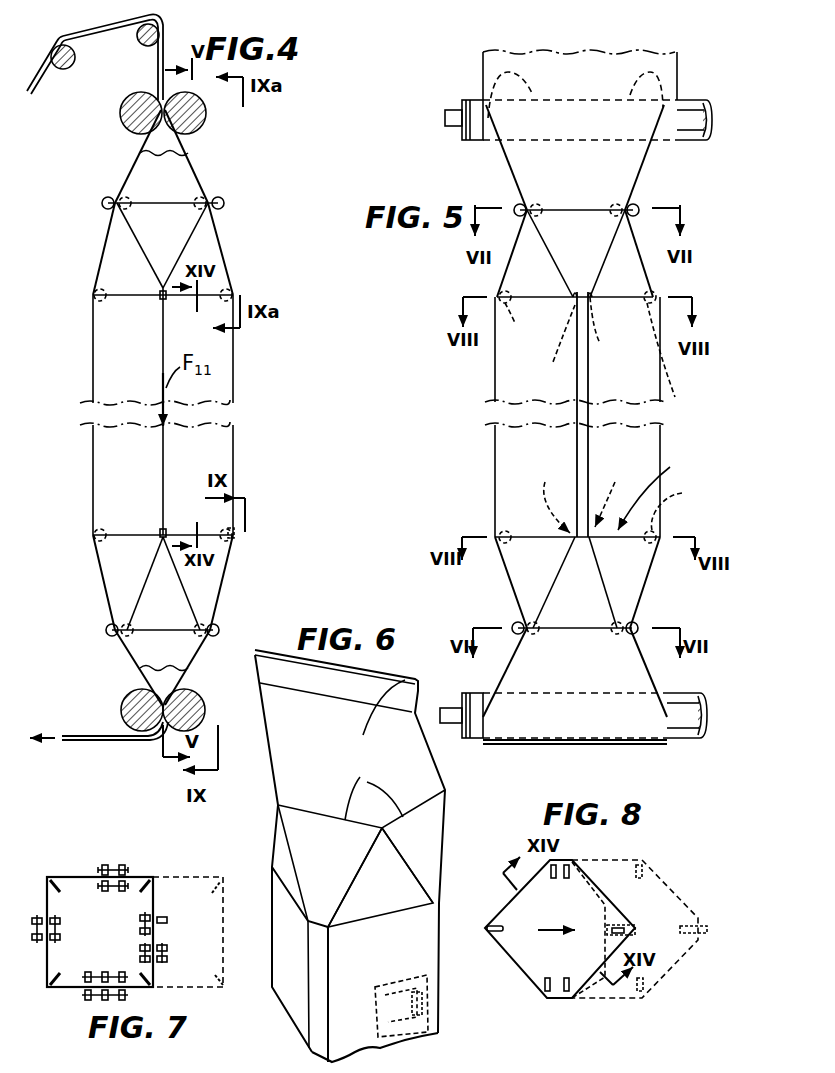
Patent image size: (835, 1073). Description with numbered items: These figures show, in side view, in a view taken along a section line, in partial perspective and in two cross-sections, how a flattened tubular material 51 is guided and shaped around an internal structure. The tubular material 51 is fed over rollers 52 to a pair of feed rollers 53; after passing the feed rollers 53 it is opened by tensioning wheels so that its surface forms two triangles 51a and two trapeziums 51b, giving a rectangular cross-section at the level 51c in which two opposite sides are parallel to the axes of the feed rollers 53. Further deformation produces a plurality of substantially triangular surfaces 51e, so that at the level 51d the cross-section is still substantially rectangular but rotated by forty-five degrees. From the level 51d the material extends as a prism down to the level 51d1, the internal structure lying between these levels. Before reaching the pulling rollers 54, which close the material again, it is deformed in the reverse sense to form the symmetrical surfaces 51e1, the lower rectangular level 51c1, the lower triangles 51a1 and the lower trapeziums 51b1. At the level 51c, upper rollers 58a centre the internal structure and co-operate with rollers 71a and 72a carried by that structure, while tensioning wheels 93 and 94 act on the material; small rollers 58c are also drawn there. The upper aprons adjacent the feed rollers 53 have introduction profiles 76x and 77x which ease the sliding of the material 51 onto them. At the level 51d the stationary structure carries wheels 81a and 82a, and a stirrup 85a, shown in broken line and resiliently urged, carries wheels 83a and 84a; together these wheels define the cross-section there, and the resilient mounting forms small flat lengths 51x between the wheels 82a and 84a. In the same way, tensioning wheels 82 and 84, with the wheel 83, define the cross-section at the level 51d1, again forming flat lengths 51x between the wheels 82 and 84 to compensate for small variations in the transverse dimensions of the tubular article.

In FIG. 4, the flattened tubular material 51 is at (99, 29).
In FIG. 5, the flattened tubular material 51 is at (672, 79).
In FIG. 6, the flattened tubular material 51 is at (266, 666).
In FIG. 4, the rollers 52 is at (137, 46).
In FIG. 4, the feed rollers 53 is at (125, 126).
In FIG. 5, the feed rollers 53 is at (480, 102).
In FIG. 4, the pulling rollers 54 is at (121, 710).
In FIG. 5, the pulling rollers 54 is at (468, 722).
In FIG. 4, the upper rollers 58a is at (102, 207).
In FIG. 5, the upper rollers 58a is at (637, 206).
In FIG. 4, the triangles 51a is at (133, 165).
In FIG. 5, the triangles 51a is at (510, 176).
In FIG. 6, the triangles 51a is at (427, 775).
In FIG. 4, the trapeziums 51b is at (200, 165).
In FIG. 5, the trapeziums 51b is at (537, 148).
In FIG. 6, the trapeziums 51b is at (412, 678).
In FIG. 4, the rectangular cross-section level 51c is at (140, 213).
In FIG. 5, the rectangular cross-section level 51c is at (580, 208).
In FIG. 6, the rectangular cross-section level 51c is at (370, 789).
In FIG. 7, the rectangular cross-section level 51c is at (47, 895).
In FIG. 5, the rotated cross-section level 51d is at (618, 298).
In FIG. 8, the rotated cross-section level 51d is at (510, 902).
In FIG. 4, the triangular surfaces 51e is at (130, 256).
In FIG. 5, the triangular surfaces 51e is at (543, 257).
In FIG. 6, the triangular surfaces 51e is at (337, 883).
In FIG. 4, the lower rotated cross-section level 51d1 is at (130, 530).
In FIG. 5, the lower rotated cross-section level 51d1 is at (667, 490).
In FIG. 4, the lower triangular surfaces 51e1 is at (180, 560).
In FIG. 5, the lower triangular surfaces 51e1 is at (545, 570).
In FIG. 4, the lower rectangular cross-section level 51c1 is at (170, 627).
In FIG. 5, the lower rectangular cross-section level 51c1 is at (553, 618).
In FIG. 4, the lower triangles 51a1 is at (183, 650).
In FIG. 5, the lower triangles 51a1 is at (656, 679).
In FIG. 4, the lower trapeziums 51b1 is at (148, 664).
In FIG. 5, the lower trapeziums 51b1 is at (535, 658).
In FIG. 5, the small flat lengths 51x is at (582, 375).
In FIG. 6, the small flat lengths 51x is at (317, 983).
In FIG. 8, the small flat lengths 51x is at (557, 1000).
In FIG. 5, the upper introduction profile 76x is at (527, 73).
In FIG. 5, the upper introduction profile 77x is at (631, 85).
In FIG. 5, the tensioning wheel 81a is at (611, 360).
In FIG. 8, the tensioning wheel 81a is at (497, 943).
In FIG. 4, the tensioning wheels 82 is at (233, 543).
In FIG. 5, the tensioning wheels 82 is at (553, 495).
In FIG. 5, the tensioning wheels 82a is at (552, 345).
In FIG. 8, the tensioning wheels 82a is at (540, 985).
In FIG. 5, the tensioning wheel 83 is at (680, 506).
In FIG. 8, the tensioning wheel 83a is at (627, 925).
In FIG. 5, the tensioning wheels 84 is at (614, 492).
In FIG. 5, the tensioning wheels 84a is at (612, 333).
In FIG. 8, the tensioning wheels 84a is at (558, 858).
In FIG. 8, the stirrup 85a is at (590, 897).
In FIG. 7, the roller pair 58c is at (122, 865).
In FIG. 7, the rollers 71a is at (62, 925).
In FIG. 7, the rollers 72a is at (140, 920).
In FIG. 7, the tensioning wheels 93 is at (55, 887).
In FIG. 7, the tensioning wheels 94 is at (143, 880).